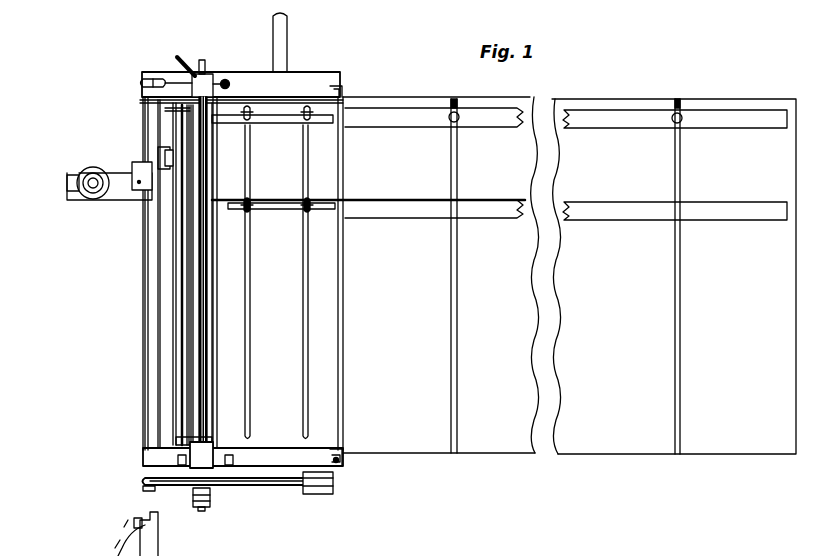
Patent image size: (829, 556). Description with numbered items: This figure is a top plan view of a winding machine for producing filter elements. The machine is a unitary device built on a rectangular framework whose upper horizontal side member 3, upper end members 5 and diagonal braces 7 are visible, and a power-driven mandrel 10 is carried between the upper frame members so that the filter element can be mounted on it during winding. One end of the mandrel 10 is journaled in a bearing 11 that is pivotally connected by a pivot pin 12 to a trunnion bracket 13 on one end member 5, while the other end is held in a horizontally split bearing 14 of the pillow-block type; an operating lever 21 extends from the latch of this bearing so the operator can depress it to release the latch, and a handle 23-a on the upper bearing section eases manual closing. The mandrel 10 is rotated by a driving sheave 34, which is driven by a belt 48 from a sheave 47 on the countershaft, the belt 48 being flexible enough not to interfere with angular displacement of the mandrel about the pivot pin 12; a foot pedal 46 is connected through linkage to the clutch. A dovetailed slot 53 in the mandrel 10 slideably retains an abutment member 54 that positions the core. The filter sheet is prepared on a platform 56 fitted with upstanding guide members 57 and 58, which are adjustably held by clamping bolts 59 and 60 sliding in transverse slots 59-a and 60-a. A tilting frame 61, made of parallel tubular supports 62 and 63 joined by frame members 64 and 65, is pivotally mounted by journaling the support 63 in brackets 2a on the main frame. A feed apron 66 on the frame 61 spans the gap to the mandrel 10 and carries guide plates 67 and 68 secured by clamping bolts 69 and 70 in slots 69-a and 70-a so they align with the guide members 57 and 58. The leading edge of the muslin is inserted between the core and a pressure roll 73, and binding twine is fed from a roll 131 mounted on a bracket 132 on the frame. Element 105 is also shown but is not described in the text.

The upper horizontal side member 3 is at (146, 338).
The upper end member 5 is at (325, 80).
The diagonal brace 7 is at (205, 389).
The power-driven mandrel 10 is at (193, 318).
The bearing 11 is at (213, 462).
The pivot pin 12 is at (232, 460).
The trunnion bracket 13 is at (185, 465).
The horizontally split bearing 14 is at (210, 74).
The operating lever 21 is at (150, 79).
The handle 23-a is at (180, 58).
The bracket 2a is at (345, 95).
The driving sheave 34 is at (155, 487).
The foot pedal 46 is at (286, 30).
The sheave 47 is at (330, 490).
The belt 48 is at (277, 486).
The slot 53 is at (207, 290).
The abutment member 54 is at (207, 216).
The platform 56 is at (625, 432).
The guide member 57 is at (630, 118).
The guide member 58 is at (612, 208).
The clamping bolt 59 is at (460, 114).
The slot 59-a is at (445, 272).
The clamping bolt 60 is at (685, 120).
The slot 60-a is at (676, 300).
The tilting frame 61 is at (135, 447).
The support 62 is at (176, 364).
The support 63 is at (342, 462).
The frame member 64 is at (185, 108).
The frame member 65 is at (185, 437).
The feed apron 66 is at (330, 165).
The guide plate 67 is at (285, 118).
The guide plate 68 is at (263, 210).
The clamping bolt 69 is at (262, 199).
The slot 69-a is at (250, 320).
The clamping bolt 70 is at (312, 210).
The slot 70-a is at (308, 312).
The pressure roll 73 is at (190, 250).
The linkage 105 is at (160, 528).
The roll 131 is at (93, 167).
The bracket 132 is at (121, 178).